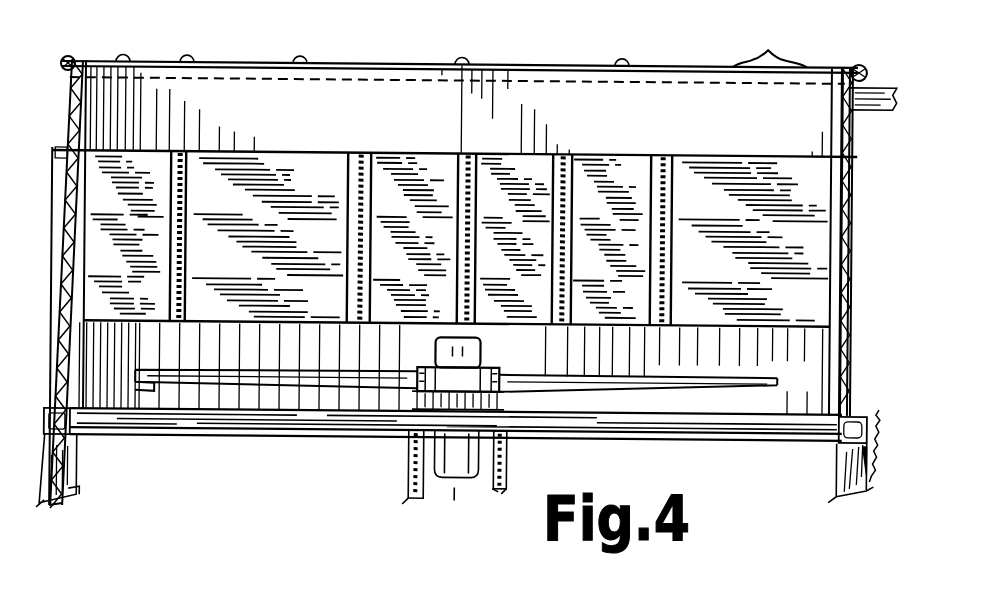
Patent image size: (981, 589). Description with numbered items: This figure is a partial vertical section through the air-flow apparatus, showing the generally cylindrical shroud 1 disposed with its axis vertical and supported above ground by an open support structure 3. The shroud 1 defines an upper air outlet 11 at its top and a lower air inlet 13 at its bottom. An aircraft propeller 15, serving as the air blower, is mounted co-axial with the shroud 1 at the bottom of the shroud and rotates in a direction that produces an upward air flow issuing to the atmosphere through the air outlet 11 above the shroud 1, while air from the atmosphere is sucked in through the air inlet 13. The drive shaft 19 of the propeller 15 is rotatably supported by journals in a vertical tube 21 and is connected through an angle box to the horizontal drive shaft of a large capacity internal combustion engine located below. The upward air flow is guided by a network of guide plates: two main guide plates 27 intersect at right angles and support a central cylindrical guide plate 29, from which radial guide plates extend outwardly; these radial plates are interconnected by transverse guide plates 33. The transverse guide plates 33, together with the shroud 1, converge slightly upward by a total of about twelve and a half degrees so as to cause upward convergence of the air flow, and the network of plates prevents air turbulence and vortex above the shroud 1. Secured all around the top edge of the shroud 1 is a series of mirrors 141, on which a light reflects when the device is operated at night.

The cylindrical shroud 1 is at (838, 110).
The open support structure 3 is at (842, 462).
The upper air outlet 11 is at (652, 64).
The mirrors 141 is at (769, 50).
The lower air inlet 13 is at (207, 415).
The aircraft propeller 15 is at (160, 388).
The drive shaft 19 is at (428, 398).
The vertical tube 21 is at (485, 471).
The main guide plates 27 is at (265, 173).
The central cylindrical guide plate 29 is at (558, 182).
The transverse guide plates 33 is at (187, 163).